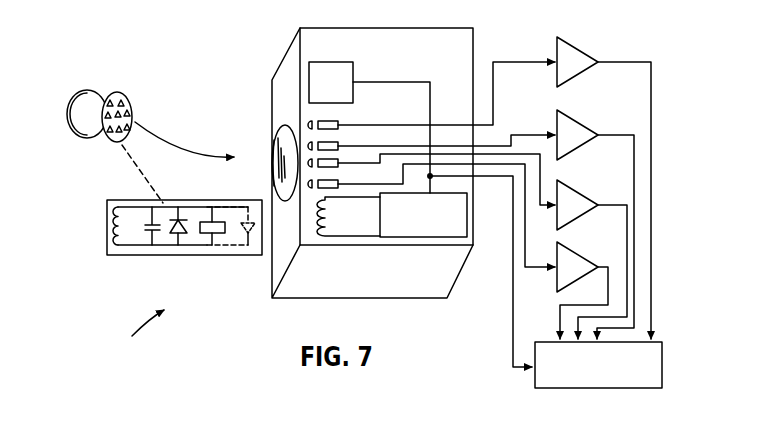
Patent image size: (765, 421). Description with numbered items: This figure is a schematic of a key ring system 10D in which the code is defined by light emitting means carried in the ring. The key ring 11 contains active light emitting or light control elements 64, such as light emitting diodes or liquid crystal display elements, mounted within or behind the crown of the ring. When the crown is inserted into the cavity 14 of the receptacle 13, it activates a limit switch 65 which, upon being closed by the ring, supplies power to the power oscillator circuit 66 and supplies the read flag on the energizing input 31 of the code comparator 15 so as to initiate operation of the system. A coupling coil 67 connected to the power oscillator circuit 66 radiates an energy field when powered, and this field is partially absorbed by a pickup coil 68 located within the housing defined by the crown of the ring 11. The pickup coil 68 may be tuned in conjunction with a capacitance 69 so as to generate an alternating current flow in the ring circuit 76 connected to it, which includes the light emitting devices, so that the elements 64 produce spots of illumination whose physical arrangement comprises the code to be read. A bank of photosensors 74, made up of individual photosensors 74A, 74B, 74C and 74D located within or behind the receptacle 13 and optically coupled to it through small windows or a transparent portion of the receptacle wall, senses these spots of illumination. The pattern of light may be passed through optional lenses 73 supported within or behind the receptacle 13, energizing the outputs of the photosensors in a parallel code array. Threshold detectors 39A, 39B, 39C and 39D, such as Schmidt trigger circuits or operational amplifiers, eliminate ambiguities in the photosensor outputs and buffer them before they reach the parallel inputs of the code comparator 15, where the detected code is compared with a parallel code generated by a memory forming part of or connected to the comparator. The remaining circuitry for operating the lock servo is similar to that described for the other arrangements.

The key ring 11 is at (91, 92).
The light emitting or light control elements 64 is at (124, 95).
The transponder circuit 76 is at (183, 225).
The pickup coil 68 is at (117, 247).
The capacitance 69 is at (150, 233).
The key ring system 10D is at (134, 331).
The cavity 14 is at (285, 125).
The receptacle 13 is at (276, 145).
The limit switch 65 is at (318, 73).
The lenses 73 is at (314, 121).
The bank of photosensors 74 is at (436, 164).
The photosensor 74A is at (338, 124).
The photosensor 74B is at (338, 146).
The photosensor 74C is at (333, 167).
The photosensor 74D is at (323, 189).
The coupling coil 67 is at (314, 239).
The power oscillator circuit 66 is at (416, 238).
The threshold detector 39A is at (571, 54).
The threshold detector 39B is at (572, 130).
The threshold detector 39C is at (572, 200).
The threshold detector 39D is at (569, 261).
The code comparator 15 is at (543, 348).
The flag or energizing input 31 is at (530, 369).